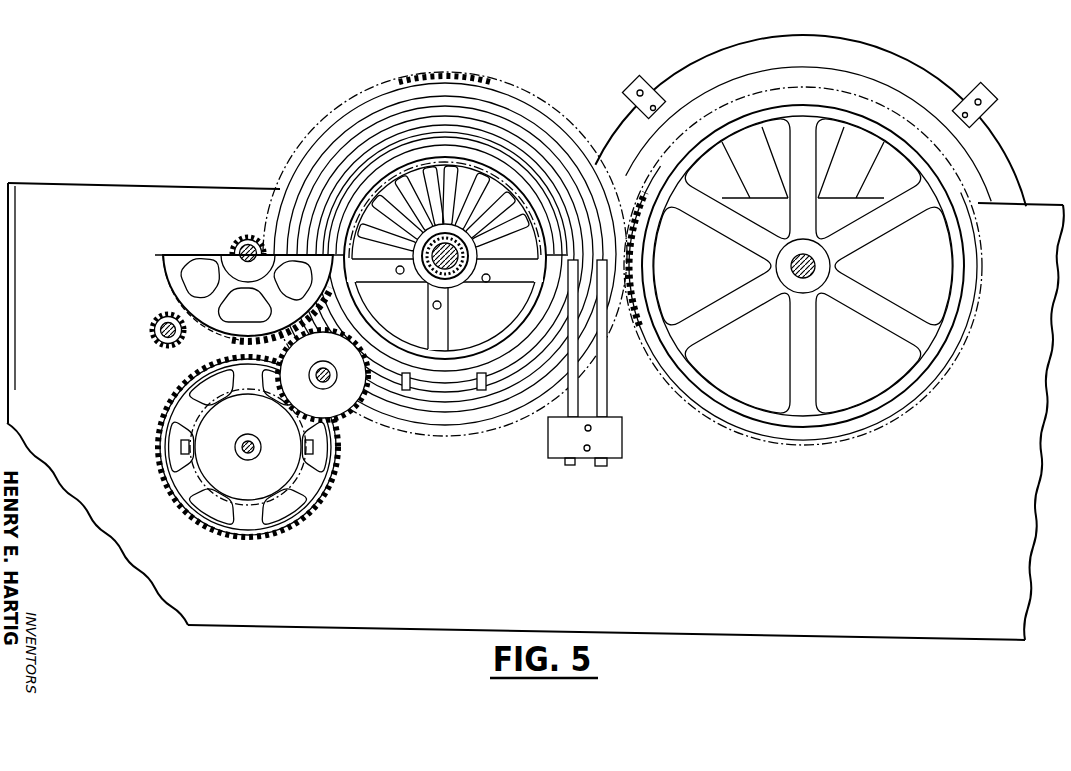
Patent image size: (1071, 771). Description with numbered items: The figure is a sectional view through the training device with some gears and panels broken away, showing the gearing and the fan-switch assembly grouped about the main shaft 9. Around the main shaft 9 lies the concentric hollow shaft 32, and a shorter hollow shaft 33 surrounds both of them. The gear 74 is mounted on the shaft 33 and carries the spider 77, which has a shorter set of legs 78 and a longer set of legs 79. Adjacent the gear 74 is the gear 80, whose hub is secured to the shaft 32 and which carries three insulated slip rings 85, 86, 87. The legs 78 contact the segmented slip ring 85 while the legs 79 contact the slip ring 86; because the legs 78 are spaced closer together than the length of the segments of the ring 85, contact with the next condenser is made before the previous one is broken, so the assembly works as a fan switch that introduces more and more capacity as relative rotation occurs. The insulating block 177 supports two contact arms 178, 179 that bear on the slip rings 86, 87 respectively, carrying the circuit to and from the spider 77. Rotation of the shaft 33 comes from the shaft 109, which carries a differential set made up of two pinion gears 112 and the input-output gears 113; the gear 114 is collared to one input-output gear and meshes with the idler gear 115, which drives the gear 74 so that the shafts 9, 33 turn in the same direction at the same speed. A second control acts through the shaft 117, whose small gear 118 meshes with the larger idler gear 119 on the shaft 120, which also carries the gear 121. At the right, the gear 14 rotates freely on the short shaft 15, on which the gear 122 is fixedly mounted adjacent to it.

The main shaft 9 is at (370, 183).
The gear 14 is at (899, 170).
The short shaft 15 is at (813, 266).
The hollow shaft 32 is at (412, 175).
The hollow shaft 33 is at (447, 240).
The gear 74 is at (441, 373).
The spider 77 is at (491, 245).
The legs 78 is at (490, 193).
The legs 79 is at (481, 391).
The gear 80 is at (400, 86).
The slip ring 85 is at (332, 185).
The slip ring 86 is at (332, 197).
The slip ring 87 is at (307, 200).
The shaft 109 is at (256, 454).
The pinion gears 112 is at (310, 460).
The input-output gears 113 is at (155, 447).
The gear 114 is at (253, 497).
The idler gear 115 is at (345, 418).
The shaft 117 is at (157, 327).
The small gear 118 is at (157, 347).
The idler gear 119 is at (163, 277).
The shaft 120 is at (240, 247).
The gear 121 is at (240, 238).
The gear 122 is at (855, 433).
The insulating block 177 is at (622, 442).
The contact arm 178 is at (546, 426).
The contact arm 179 is at (603, 390).